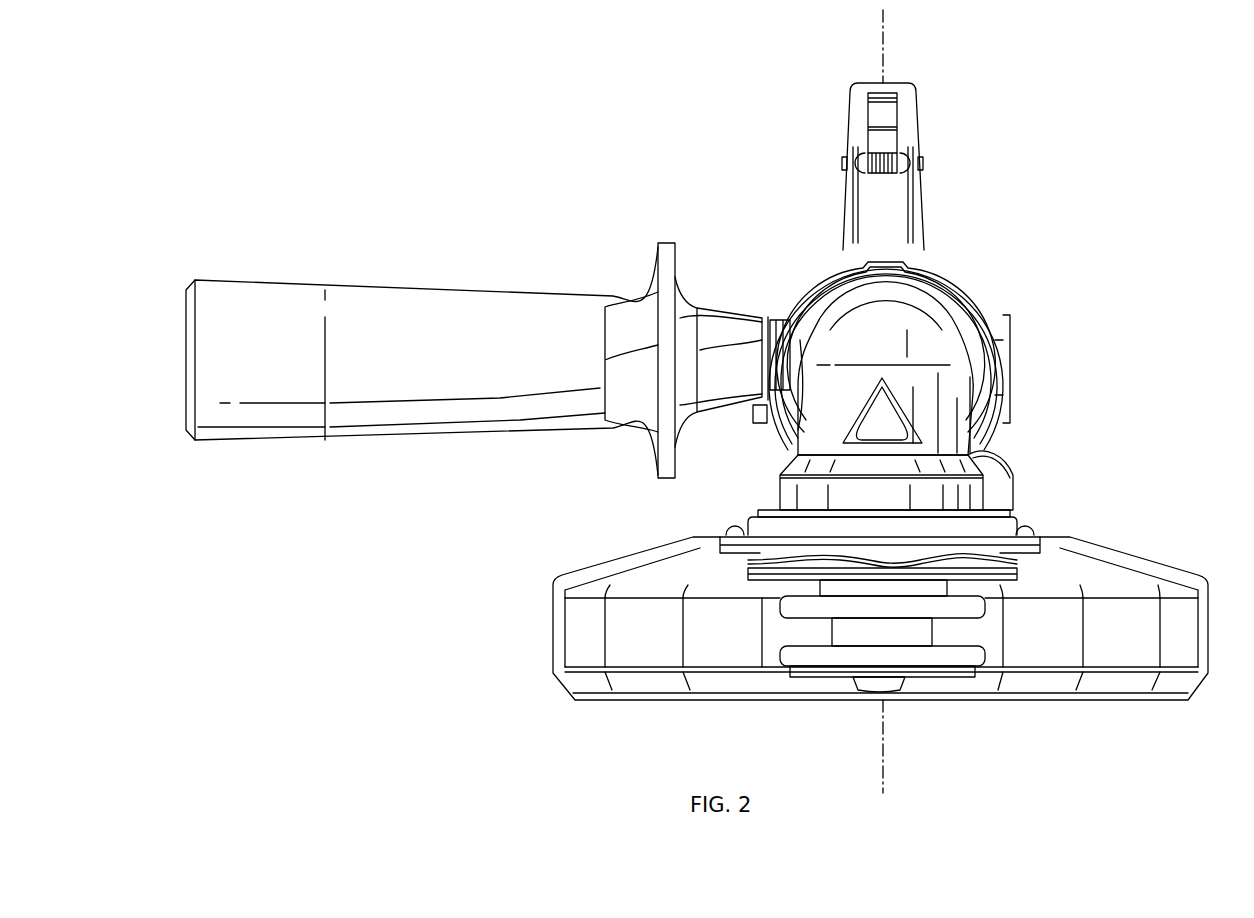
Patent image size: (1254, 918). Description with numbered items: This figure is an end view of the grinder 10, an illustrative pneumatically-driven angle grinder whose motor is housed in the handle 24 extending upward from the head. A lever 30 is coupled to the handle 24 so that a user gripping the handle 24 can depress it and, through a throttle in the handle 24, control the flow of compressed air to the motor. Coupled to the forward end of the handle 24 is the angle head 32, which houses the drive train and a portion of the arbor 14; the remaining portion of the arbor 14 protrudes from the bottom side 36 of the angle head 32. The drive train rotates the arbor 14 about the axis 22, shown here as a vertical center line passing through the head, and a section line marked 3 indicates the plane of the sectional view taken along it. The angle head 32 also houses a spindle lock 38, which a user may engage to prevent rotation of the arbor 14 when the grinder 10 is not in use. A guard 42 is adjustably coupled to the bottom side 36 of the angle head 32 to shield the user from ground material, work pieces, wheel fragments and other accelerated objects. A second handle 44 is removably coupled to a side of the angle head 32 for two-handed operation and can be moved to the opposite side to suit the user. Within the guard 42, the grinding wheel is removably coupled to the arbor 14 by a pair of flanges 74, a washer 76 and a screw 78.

The grinder 10 is at (685, 138).
The arbor 14 is at (880, 622).
The axis 22 is at (883, 28).
The handle 24 is at (808, 262).
The lever 30 is at (935, 205).
The angle head 32 is at (930, 322).
The bottom side 36 is at (800, 515).
The spindle lock 38 is at (1013, 460).
The guard 42 is at (1145, 560).
The second handle 44 is at (460, 298).
The flanges 74 is at (783, 607).
The washer 76 is at (935, 670).
The screw 78 is at (860, 683).
The section line 3 is at (900, 68).